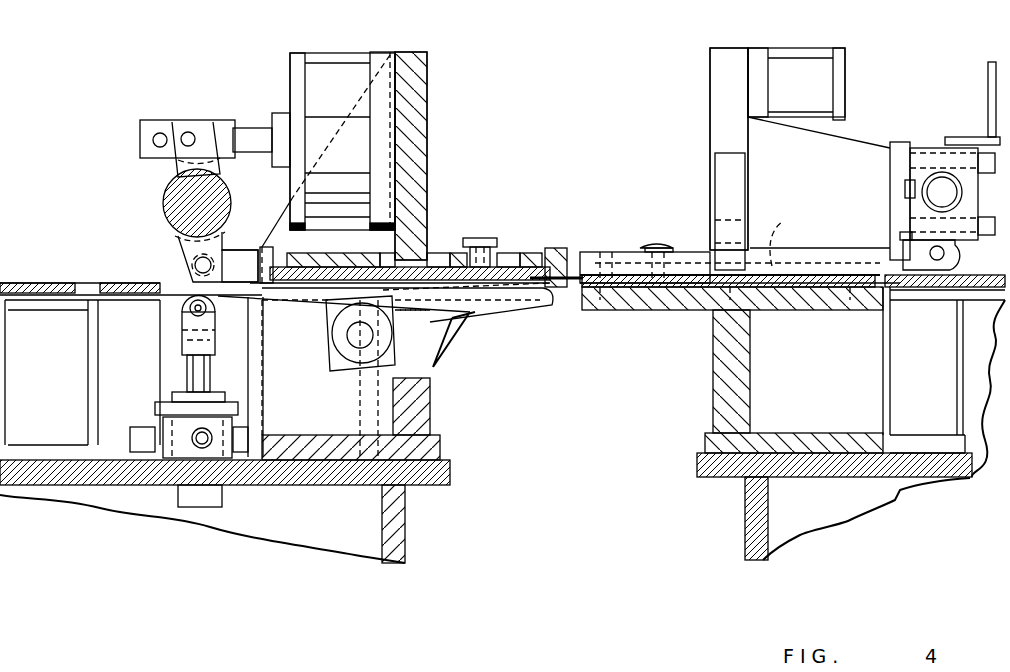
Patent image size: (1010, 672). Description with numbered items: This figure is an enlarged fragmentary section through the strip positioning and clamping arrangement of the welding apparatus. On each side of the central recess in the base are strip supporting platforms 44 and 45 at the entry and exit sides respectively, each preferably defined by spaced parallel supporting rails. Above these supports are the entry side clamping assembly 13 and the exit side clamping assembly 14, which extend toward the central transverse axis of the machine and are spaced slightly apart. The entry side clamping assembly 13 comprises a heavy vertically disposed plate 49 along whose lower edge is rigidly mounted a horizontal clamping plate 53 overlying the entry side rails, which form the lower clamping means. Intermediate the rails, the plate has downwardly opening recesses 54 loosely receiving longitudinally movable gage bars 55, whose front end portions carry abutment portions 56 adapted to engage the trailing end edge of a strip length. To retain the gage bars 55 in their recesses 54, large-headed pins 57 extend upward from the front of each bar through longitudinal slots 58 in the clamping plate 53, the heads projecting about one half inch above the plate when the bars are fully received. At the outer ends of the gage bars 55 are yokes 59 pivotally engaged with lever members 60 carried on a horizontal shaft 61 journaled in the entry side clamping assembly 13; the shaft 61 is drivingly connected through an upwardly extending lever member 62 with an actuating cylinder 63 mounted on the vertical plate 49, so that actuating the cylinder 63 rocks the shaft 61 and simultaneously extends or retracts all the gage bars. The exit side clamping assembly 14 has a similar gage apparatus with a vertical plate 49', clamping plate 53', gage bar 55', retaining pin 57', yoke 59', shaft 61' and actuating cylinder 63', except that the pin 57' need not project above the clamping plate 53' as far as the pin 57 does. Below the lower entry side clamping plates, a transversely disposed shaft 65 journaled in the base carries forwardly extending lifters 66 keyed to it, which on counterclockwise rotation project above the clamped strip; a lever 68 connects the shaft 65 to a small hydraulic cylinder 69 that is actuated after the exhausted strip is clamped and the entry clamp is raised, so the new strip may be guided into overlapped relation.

The entry side clamping assembly 13 is at (440, 55).
The exit side clamping assembly 14 is at (702, 68).
The strip supporting platform 44 is at (15, 283).
The strip supporting platform 45 is at (962, 275).
The vertical plate 49 is at (438, 156).
The vertical plate 49' is at (752, 206).
The horizontal clamping plate 53 is at (400, 259).
The horizontal clamping plate 53' is at (740, 262).
The recess 54 is at (440, 253).
The gage bar 55 is at (375, 248).
The gage bar 55' is at (792, 236).
The abutment portion 56 is at (563, 250).
The large-headed pin 57 is at (519, 241).
The gage bar retaining pin 57' is at (663, 249).
The longitudinal slot 58 is at (474, 240).
The yoke 59 is at (259, 256).
The yoke 59' is at (899, 238).
The lever member 60 is at (228, 240).
The horizontal shaft 61 is at (178, 203).
The horizontal shaft 61' is at (930, 161).
The lever member 62 is at (215, 163).
The actuating cylinder 63 is at (314, 144).
The actuating cylinder 63' is at (771, 149).
The transversely disposed shaft 65 is at (340, 350).
The lifter 66 is at (445, 345).
The lever 68 is at (250, 335).
The hydraulic cylinder 69 is at (175, 438).